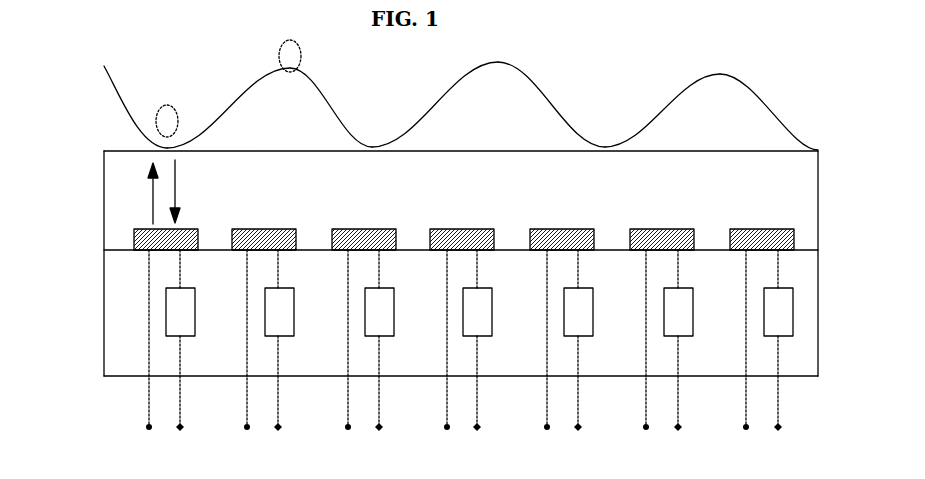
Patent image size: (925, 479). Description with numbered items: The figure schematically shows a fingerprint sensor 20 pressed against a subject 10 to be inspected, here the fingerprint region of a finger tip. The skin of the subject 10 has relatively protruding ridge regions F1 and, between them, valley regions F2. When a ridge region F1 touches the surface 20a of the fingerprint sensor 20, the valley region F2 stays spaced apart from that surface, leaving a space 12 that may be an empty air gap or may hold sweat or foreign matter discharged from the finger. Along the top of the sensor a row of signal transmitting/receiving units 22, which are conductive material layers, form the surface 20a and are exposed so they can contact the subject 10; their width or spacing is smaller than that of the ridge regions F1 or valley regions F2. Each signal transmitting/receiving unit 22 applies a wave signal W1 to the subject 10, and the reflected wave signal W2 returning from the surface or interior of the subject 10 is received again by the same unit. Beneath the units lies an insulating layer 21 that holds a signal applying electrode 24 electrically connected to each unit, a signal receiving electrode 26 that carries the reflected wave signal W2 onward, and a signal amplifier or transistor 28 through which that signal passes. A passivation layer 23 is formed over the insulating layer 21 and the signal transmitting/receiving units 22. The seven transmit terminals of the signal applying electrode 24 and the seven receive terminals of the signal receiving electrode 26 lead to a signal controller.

The subject 10 is at (429, 106).
The space 12 is at (317, 117).
The fingerprint sensor 20 is at (418, 282).
The surface 20a is at (118, 151).
The insulating layer 21 is at (113, 346).
The signal transmitting/receiving unit 22 is at (134, 241).
The passivation layer 23 is at (432, 204).
The signal applying electrode 24 is at (148, 406).
The signal receiving electrode 26 is at (181, 272).
The signal amplifier or transistor 28 is at (189, 338).
The ridge region F1 is at (167, 121).
The valley region F2 is at (290, 56).
The wave signal W1 is at (144, 193).
The reflected wave signal W2 is at (185, 191).